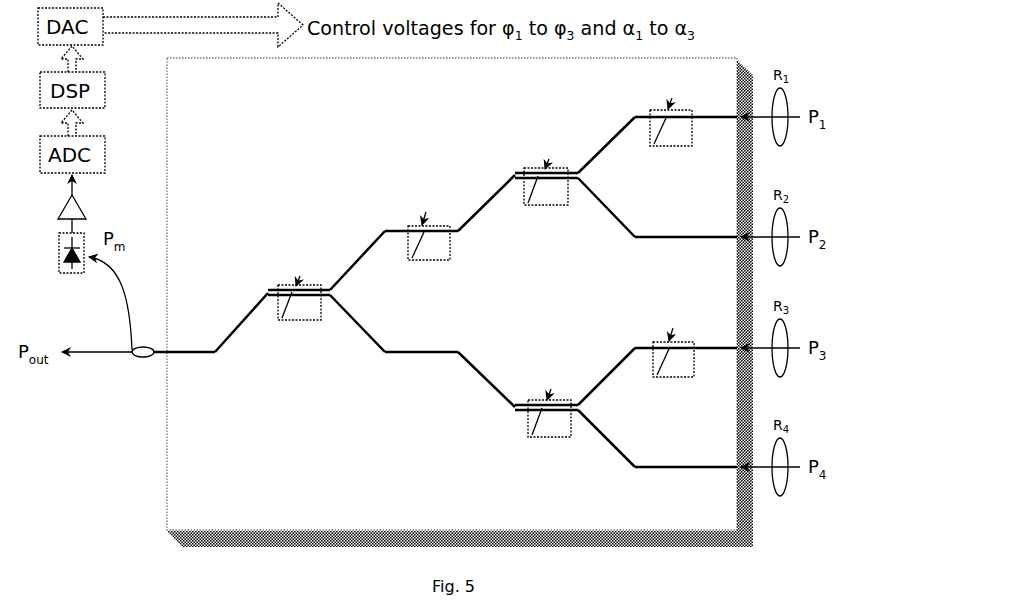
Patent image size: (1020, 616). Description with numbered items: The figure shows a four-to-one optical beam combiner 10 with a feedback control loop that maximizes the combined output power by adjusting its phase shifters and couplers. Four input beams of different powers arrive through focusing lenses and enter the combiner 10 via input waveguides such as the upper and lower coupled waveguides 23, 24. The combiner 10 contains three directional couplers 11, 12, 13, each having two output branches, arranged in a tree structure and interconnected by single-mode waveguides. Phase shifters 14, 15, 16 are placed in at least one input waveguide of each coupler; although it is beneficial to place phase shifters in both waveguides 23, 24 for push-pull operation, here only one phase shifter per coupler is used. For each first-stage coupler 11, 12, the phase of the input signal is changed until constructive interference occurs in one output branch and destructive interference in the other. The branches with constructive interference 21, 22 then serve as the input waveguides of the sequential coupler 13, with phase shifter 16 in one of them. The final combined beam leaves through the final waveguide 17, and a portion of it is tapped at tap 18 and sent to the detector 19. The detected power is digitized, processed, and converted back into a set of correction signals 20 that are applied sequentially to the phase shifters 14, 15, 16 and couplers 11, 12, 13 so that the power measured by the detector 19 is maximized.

The combiner 10 is at (460, 302).
The directional coupler 11 is at (546, 189).
The directional coupler 12 is at (546, 418).
The sequential coupler 13 is at (299, 302).
The phase shifter 14 is at (673, 118).
The phase shifter 15 is at (674, 345).
The phase shifter 16 is at (425, 230).
The final waveguide 17 is at (211, 322).
The tap 18 is at (146, 356).
The detector 19 is at (59, 253).
The correction signals 20 is at (203, 29).
The constructive-interference branch 21 is at (486, 203).
The constructive-interference branch 22 is at (486, 379).
The upper coupled waveguide 23 is at (686, 107).
The lower coupled waveguide 24 is at (686, 227).